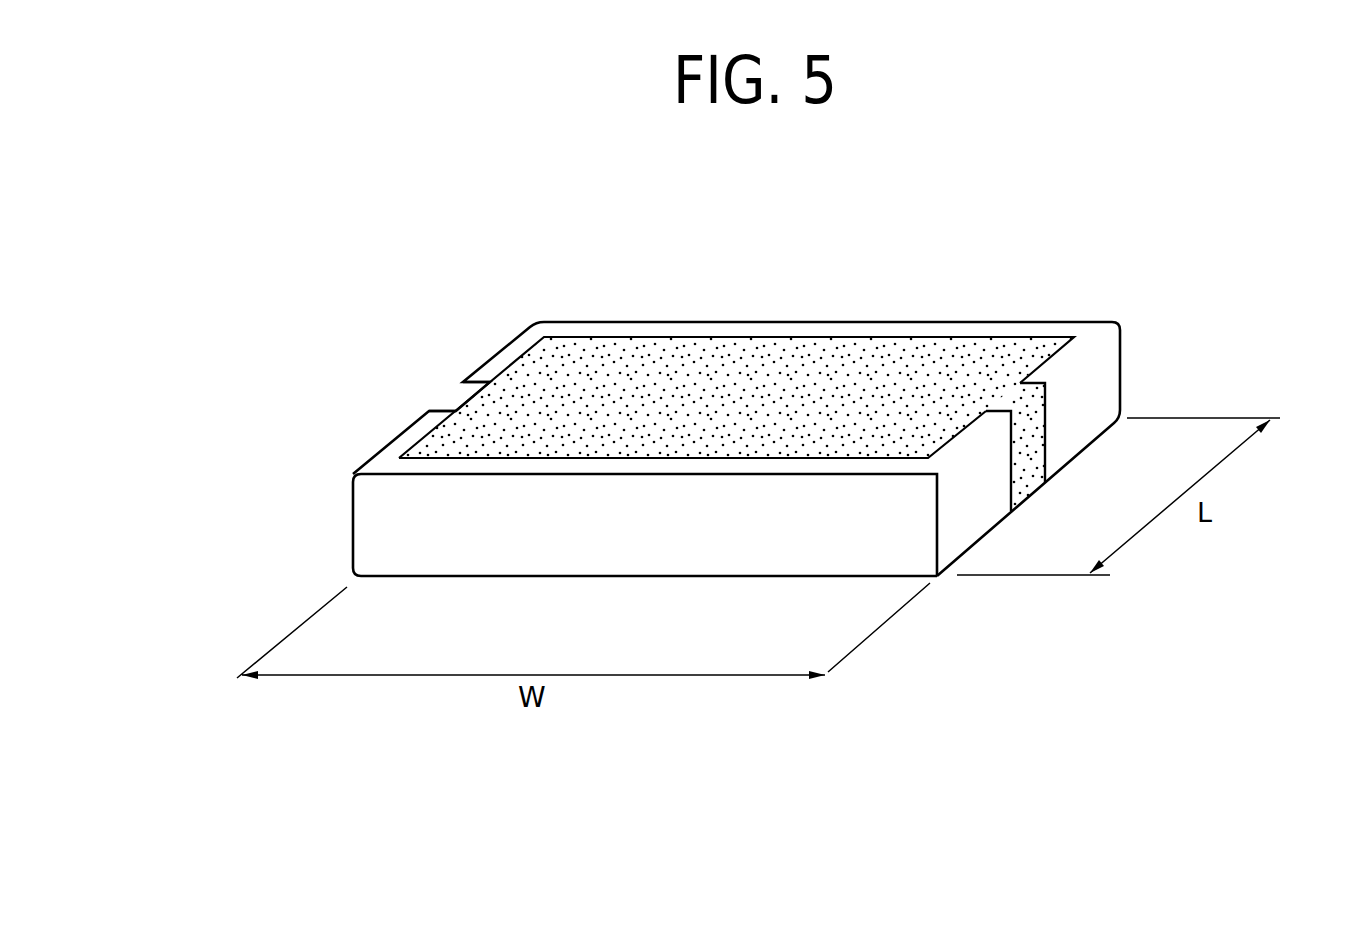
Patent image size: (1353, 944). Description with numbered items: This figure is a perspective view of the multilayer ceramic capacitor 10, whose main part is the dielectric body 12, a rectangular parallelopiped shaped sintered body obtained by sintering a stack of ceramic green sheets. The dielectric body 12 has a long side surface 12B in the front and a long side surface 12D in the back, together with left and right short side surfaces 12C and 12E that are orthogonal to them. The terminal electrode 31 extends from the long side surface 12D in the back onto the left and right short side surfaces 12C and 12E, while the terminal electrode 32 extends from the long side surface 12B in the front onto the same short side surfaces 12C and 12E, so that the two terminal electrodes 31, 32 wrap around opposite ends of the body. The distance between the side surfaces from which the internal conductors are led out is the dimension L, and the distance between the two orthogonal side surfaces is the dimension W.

The multilayer ceramic capacitor 10 is at (1073, 300).
The dielectric body 12 is at (910, 360).
The long side surface in the front 12B is at (570, 552).
The short side surface 12C is at (1030, 464).
The long side surface in the back 12D is at (832, 320).
The short side surface 12E is at (447, 392).
The terminal electrode 31 is at (747, 320).
The terminal electrode 32 is at (763, 552).